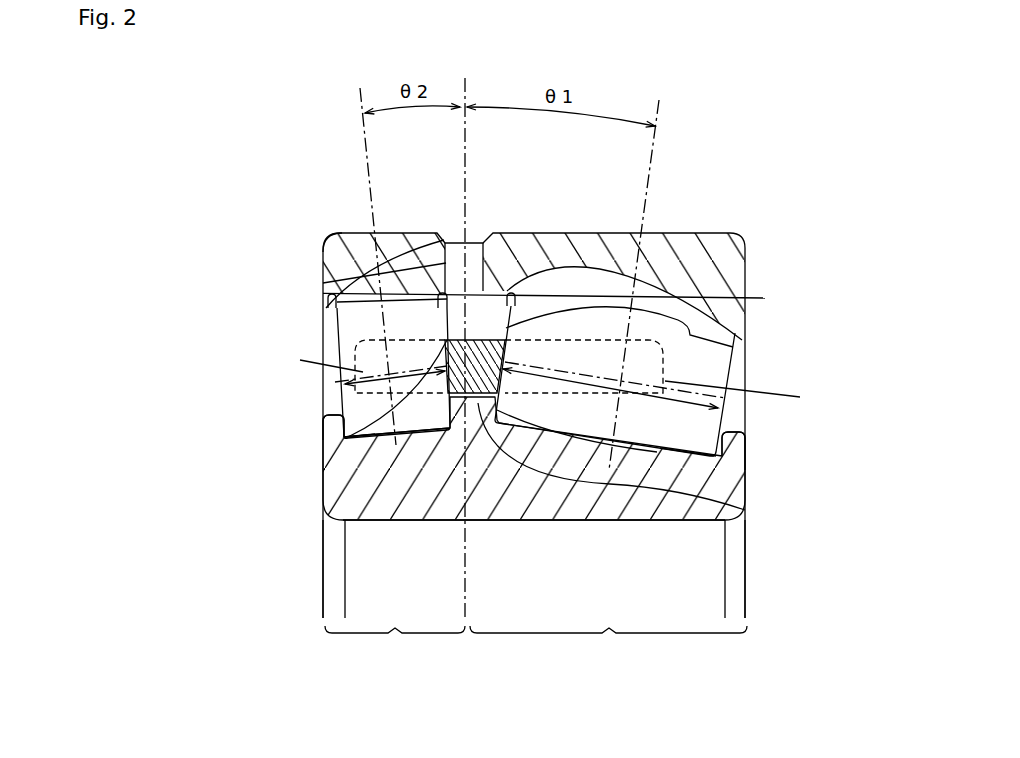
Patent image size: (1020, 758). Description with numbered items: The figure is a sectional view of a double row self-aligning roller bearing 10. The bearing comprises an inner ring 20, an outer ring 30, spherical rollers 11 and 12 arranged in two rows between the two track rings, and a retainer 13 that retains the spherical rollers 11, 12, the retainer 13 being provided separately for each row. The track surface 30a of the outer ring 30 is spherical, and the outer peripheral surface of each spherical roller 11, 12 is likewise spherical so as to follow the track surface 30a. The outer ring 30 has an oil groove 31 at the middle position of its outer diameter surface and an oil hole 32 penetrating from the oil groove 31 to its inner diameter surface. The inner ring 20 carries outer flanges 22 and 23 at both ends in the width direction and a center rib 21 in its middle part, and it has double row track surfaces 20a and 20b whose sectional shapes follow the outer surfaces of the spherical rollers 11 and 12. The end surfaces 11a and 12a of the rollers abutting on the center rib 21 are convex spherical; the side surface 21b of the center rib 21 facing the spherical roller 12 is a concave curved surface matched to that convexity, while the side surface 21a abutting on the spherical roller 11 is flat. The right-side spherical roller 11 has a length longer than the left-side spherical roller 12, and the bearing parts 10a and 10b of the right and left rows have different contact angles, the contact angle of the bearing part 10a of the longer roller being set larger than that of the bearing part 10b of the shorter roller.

The double row self-aligning roller bearing 10 is at (300, 163).
The bearing part 10a is at (608, 592).
The bearing part 10b is at (394, 592).
The spherical roller 11 is at (702, 363).
The end surface 11a is at (485, 266).
The spherical roller 12 is at (347, 330).
The end surface 12a is at (448, 250).
The retainer 13 is at (345, 294).
The inner ring 20 is at (360, 492).
The track surface 20a is at (705, 430).
The track surface 20b is at (343, 412).
The center rib 21 is at (695, 512).
The side surface 21a is at (660, 466).
The side surface 21b is at (350, 441).
The outer flange 22 is at (727, 442).
The outer flange 23 is at (332, 427).
The outer ring 30 is at (722, 245).
The track surface 30a is at (733, 338).
The oil groove 31 is at (447, 242).
The oil hole 32 is at (320, 235).